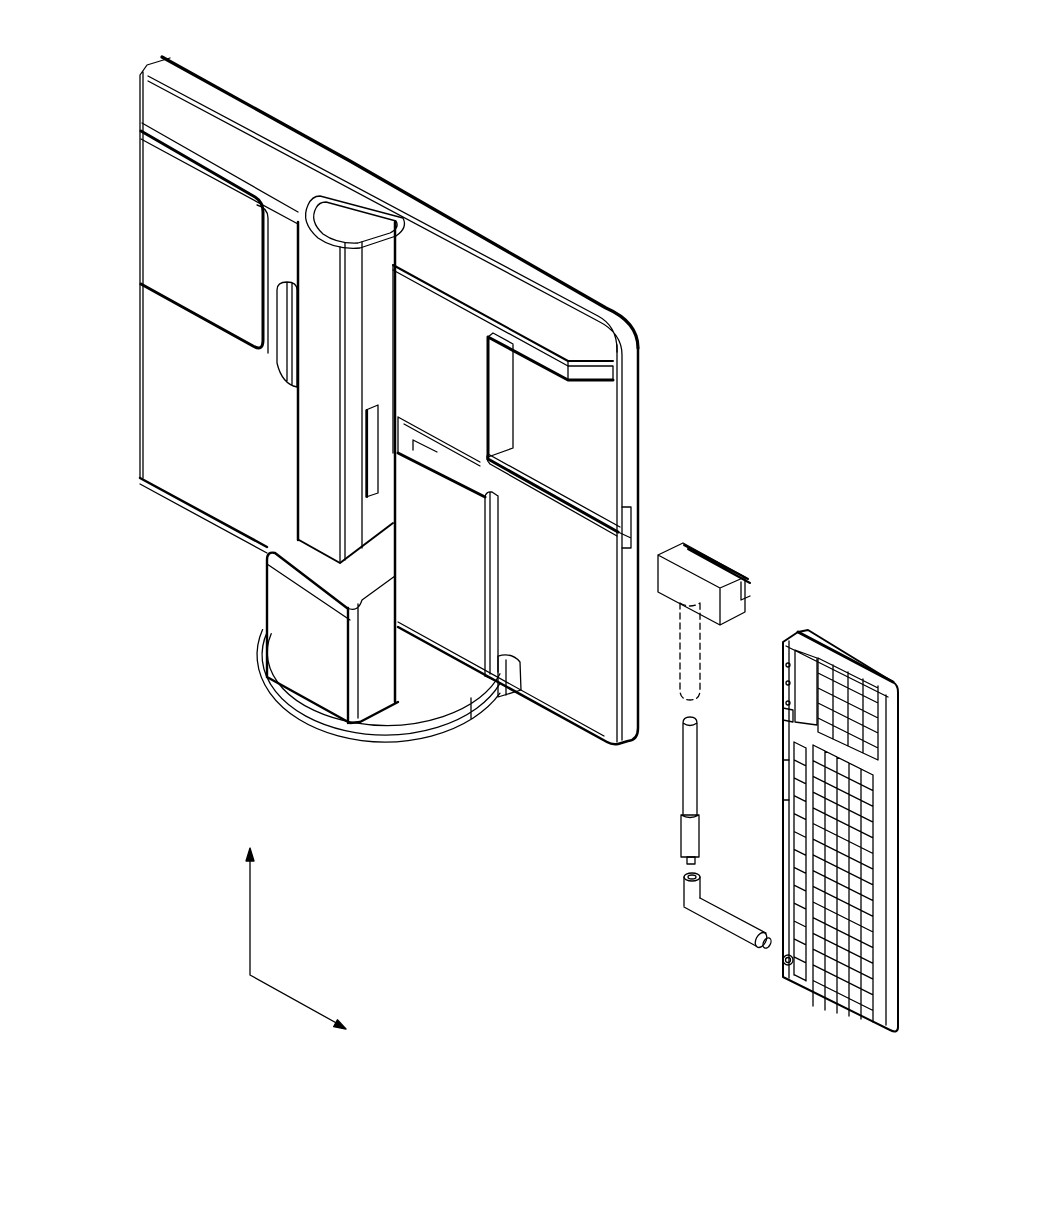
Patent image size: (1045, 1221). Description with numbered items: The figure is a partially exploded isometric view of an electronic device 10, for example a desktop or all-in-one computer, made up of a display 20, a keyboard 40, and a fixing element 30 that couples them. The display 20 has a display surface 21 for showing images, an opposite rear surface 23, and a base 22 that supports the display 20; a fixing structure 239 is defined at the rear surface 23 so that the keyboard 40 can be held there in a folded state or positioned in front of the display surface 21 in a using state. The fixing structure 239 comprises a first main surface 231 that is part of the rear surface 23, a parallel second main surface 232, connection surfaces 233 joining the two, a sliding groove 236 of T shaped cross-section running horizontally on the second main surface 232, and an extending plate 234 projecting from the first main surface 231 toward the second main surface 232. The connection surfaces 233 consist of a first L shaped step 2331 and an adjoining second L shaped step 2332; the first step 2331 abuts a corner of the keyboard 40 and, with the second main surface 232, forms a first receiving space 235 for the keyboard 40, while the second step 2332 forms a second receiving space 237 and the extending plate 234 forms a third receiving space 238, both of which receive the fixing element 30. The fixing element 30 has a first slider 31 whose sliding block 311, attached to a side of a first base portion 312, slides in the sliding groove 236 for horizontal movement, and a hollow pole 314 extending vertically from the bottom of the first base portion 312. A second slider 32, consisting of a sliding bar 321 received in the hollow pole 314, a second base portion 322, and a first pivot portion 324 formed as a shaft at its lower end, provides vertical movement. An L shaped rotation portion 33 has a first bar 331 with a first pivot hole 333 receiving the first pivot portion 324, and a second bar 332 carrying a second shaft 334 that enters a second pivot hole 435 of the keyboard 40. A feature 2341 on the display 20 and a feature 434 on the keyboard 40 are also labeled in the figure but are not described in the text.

The electronic device 10 is at (510, 42).
The display 20 is at (511, 164).
The display surface 21 is at (322, 144).
The base 22 is at (313, 662).
The rear surface 23 is at (214, 479).
The first main surface 231 is at (398, 302).
The second main surface 232 is at (578, 402).
The connection surfaces 233 is at (690, 190).
The first L shaped step 2331 is at (508, 355).
The second L shaped step 2332 is at (497, 375).
The extending plate 234 is at (447, 557).
The channel wall 2341 is at (326, 512).
The first receiving space 235 is at (540, 374).
The sliding groove 236 is at (572, 497).
The second receiving space 237 is at (456, 458).
The third receiving space 238 is at (509, 620).
The fixing structure 239 is at (775, 212).
The fixing element 30 is at (716, 540).
The first slider 31 is at (847, 525).
The sliding block 311 is at (747, 581).
The first base portion 312 is at (730, 610).
The hollow pole 314 is at (700, 603).
The second slider 32 is at (582, 785).
The sliding bar 321 is at (690, 792).
The second base portion 322 is at (687, 836).
The first pivot portion 324 is at (690, 860).
The rotation portion 33 is at (591, 878).
The first bar 331 is at (688, 889).
The second bar 332 is at (712, 917).
The first pivot hole 333 is at (682, 875).
The second shaft 334 is at (767, 945).
The keyboard 40 is at (861, 648).
The keyboard side edge 434 is at (787, 784).
The second pivot hole 435 is at (786, 953).